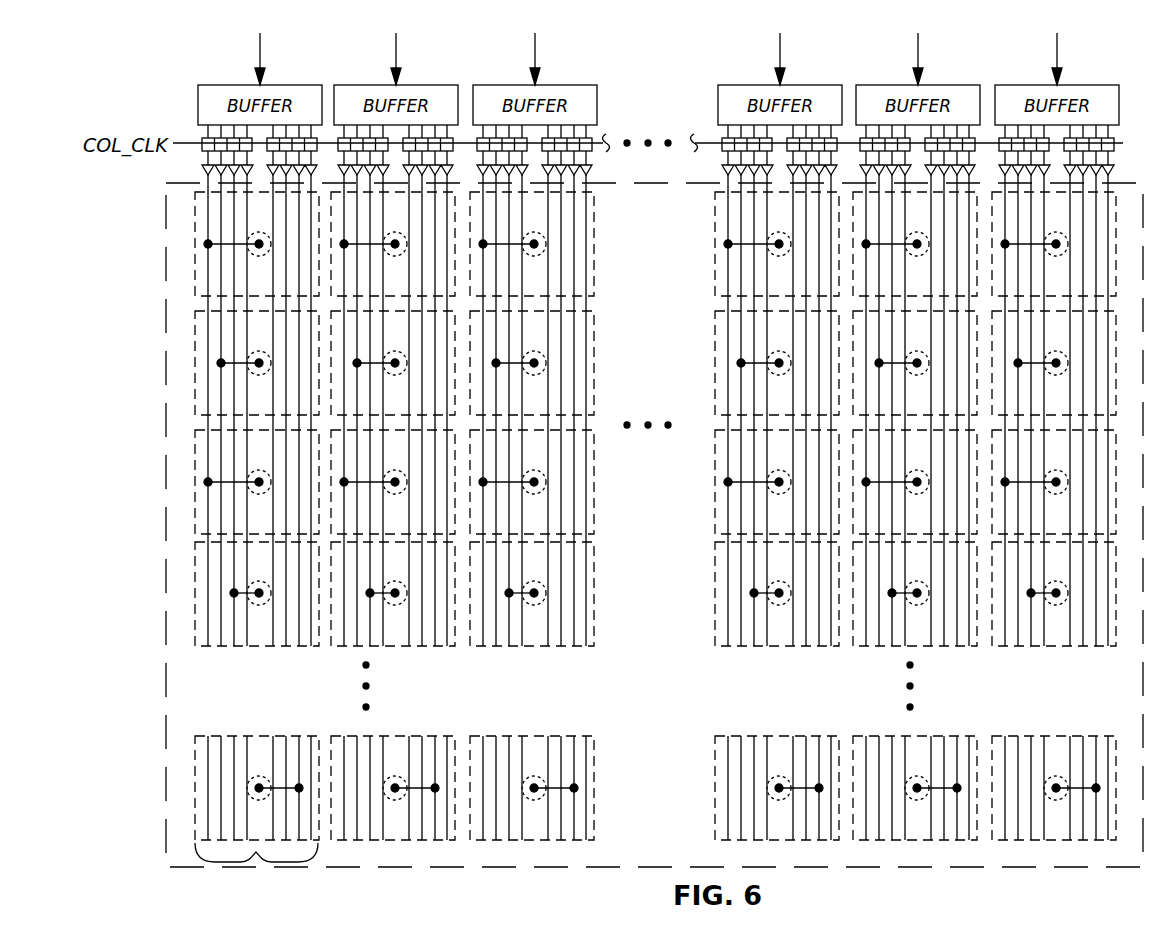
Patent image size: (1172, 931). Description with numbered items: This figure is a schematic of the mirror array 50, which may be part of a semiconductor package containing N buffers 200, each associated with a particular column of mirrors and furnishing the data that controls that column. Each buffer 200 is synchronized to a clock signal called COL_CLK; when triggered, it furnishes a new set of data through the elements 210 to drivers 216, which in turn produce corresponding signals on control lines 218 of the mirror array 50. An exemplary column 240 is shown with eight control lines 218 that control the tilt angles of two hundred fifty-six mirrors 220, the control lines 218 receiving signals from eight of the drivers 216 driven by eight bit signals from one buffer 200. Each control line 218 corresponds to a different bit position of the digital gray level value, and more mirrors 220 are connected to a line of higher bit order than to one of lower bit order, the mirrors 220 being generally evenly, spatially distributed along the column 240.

The mirror array 50 is at (167, 418).
The buffer 200 is at (523, 85).
The latch / register cells 210 is at (267, 145).
The driver 216 is at (207, 167).
The control line 218 is at (208, 267).
The mirror 220 is at (197, 240).
The column 240 is at (256, 853).